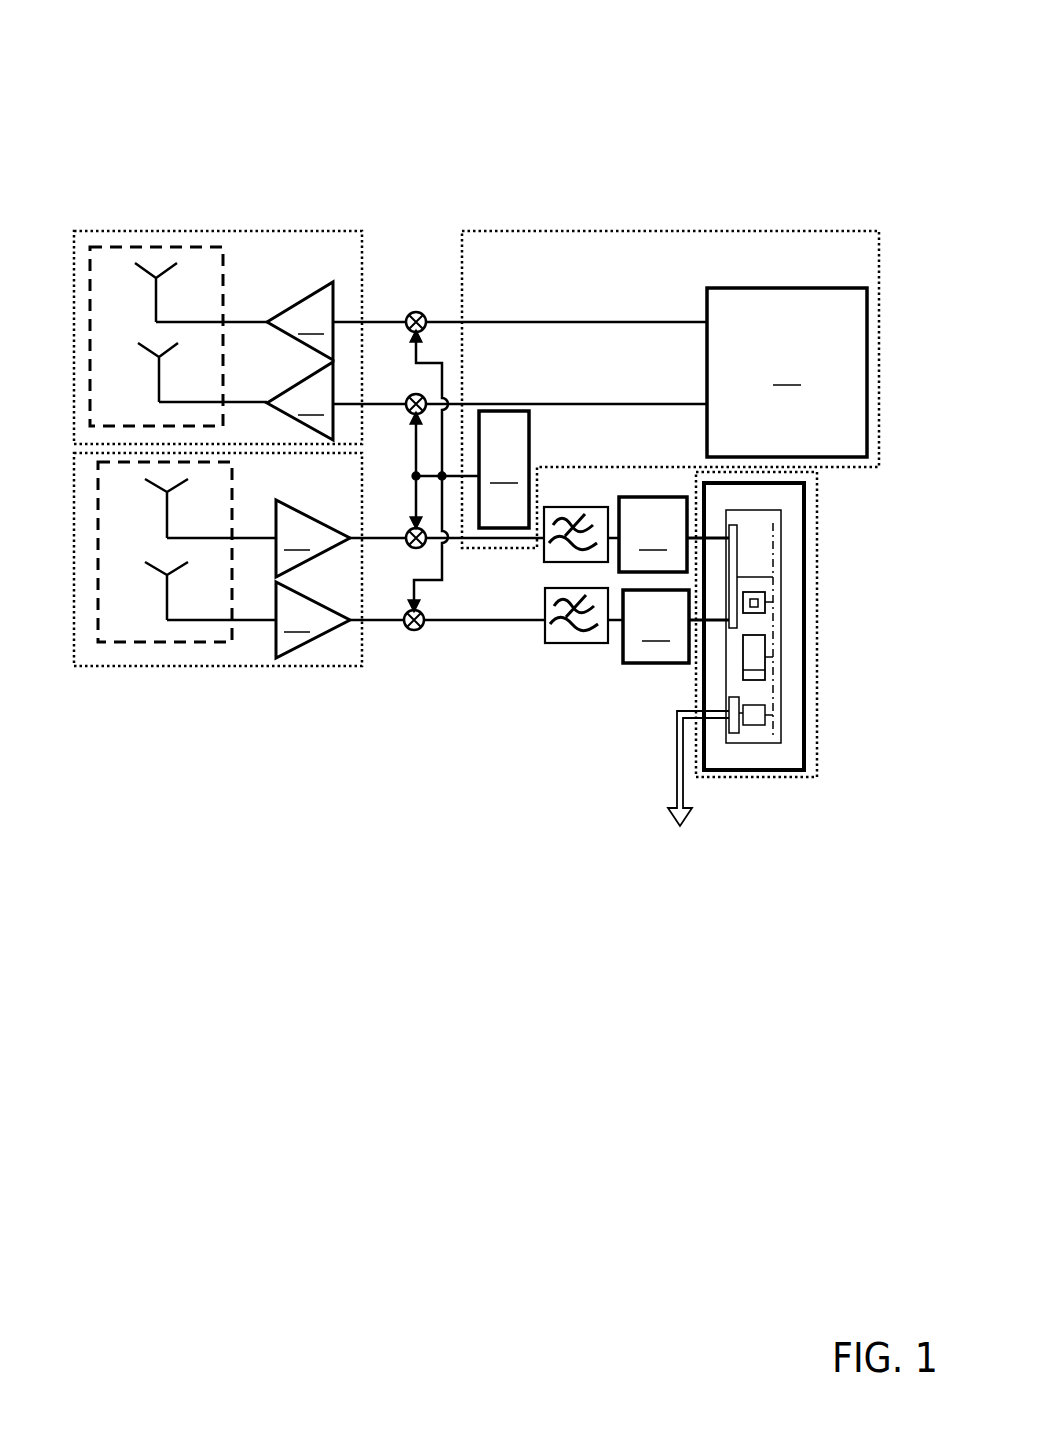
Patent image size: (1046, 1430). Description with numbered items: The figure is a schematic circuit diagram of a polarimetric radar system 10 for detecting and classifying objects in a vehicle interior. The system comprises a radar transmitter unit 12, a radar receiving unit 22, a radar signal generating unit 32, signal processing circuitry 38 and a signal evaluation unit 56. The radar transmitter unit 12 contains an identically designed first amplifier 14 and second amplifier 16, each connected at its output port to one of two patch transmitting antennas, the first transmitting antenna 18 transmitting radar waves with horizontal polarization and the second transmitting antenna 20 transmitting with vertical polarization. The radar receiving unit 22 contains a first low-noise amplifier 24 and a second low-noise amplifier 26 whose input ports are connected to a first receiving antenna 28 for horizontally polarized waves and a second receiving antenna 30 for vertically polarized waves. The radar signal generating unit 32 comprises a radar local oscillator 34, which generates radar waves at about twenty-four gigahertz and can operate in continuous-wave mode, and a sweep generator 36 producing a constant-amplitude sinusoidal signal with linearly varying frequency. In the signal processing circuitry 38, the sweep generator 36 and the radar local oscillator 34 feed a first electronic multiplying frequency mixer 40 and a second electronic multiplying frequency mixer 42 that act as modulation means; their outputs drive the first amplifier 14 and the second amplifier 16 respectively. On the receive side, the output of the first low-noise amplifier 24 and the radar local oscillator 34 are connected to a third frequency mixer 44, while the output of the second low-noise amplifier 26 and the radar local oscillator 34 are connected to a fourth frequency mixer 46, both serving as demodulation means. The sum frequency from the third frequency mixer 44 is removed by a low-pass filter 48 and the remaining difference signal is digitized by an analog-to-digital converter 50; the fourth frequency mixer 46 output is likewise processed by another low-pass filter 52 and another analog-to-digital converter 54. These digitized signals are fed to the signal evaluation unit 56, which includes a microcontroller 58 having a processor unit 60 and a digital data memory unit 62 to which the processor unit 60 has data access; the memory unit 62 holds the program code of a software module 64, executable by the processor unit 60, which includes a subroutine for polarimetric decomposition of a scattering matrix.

The polarimetric radar system 10 is at (848, 26).
The radar transmitter unit 12 is at (172, 230).
The first amplifier 14 is at (300, 321).
The second amplifier 16 is at (300, 401).
The first transmitting antenna 18 is at (156, 299).
The second transmitting antenna 20 is at (157, 378).
The radar receiving unit 22 is at (137, 667).
The first low-noise amplifier 24 is at (313, 538).
The second low-noise amplifier 26 is at (313, 620).
The first receiving antenna 28 is at (166, 510).
The second receiving antenna 30 is at (166, 595).
The radar signal generating unit 32 is at (623, 230).
The radar local oscillator 34 is at (468, 471).
The sweep generator 36 is at (787, 372).
The signal processing circuitry 38 is at (426, 704).
The first electronic multiplying frequency mixer 40 is at (410, 313).
The second electronic multiplying frequency mixer 42 is at (410, 396).
The third electronic multiplying frequency mixer 44 is at (409, 528).
The fourth electronic multiplying frequency mixer 46 is at (406, 634).
The low-pass filter 48 is at (541, 553).
The analog-to-digital converter 50 is at (653, 534).
The low-pass filter 52 is at (543, 633).
The analog-to-digital converter 54 is at (656, 626).
The signal evaluation unit 56 is at (752, 778).
The microcontroller 58 is at (782, 708).
The processor unit 60 is at (763, 600).
The digital data memory unit 62 is at (682, 673).
The software module 64 is at (743, 658).